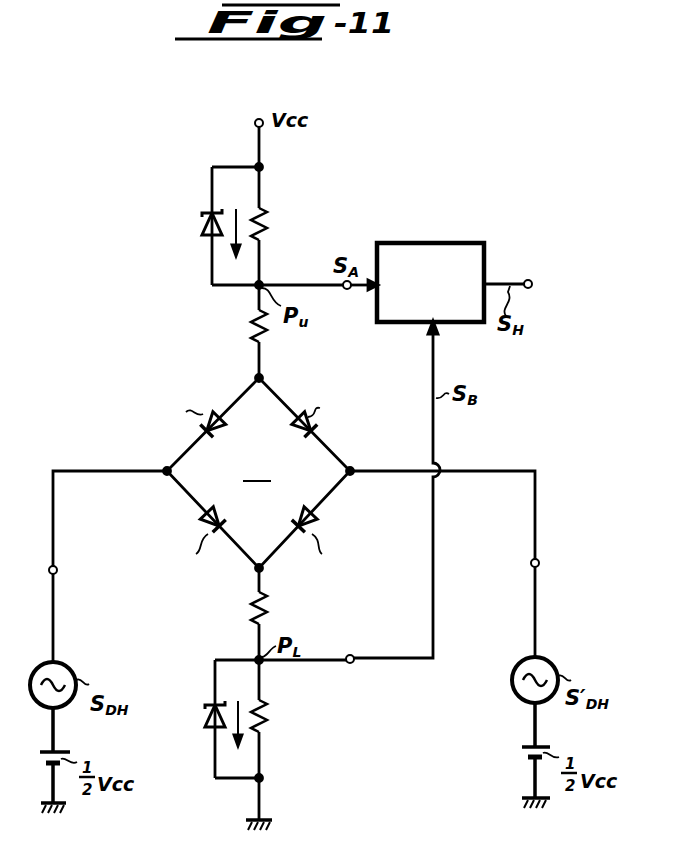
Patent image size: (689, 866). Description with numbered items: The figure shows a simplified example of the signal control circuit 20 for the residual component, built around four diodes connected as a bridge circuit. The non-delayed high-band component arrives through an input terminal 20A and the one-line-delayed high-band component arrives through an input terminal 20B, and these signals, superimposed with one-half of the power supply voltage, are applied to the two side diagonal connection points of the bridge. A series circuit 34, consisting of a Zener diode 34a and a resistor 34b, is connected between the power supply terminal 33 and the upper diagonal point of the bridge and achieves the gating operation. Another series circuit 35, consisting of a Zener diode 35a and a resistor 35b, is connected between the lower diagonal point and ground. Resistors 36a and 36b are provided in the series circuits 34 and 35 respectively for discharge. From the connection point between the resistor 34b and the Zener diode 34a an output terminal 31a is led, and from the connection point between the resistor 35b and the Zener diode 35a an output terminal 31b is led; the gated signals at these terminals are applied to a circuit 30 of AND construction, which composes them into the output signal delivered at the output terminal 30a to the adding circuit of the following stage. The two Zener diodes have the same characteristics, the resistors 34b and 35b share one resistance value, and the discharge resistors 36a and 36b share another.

The power supply terminal 33 is at (255, 119).
The series circuit 34 is at (240, 271).
The Zener diode 34a is at (206, 242).
The resistor 34b is at (252, 330).
The resistor 36a is at (272, 224).
The series circuit 35 is at (250, 699).
The Zener diode 35a is at (212, 740).
The resistor 35b is at (272, 603).
The resistor 36b is at (272, 727).
The output terminal 31a is at (347, 290).
The output terminal 31b is at (352, 663).
The circuit of AND construction 30 is at (442, 243).
The output terminal 30a is at (529, 280).
The signal control circuit 20 is at (161, 383).
The input terminal 20A is at (57, 571).
The input terminal 20B is at (540, 561).